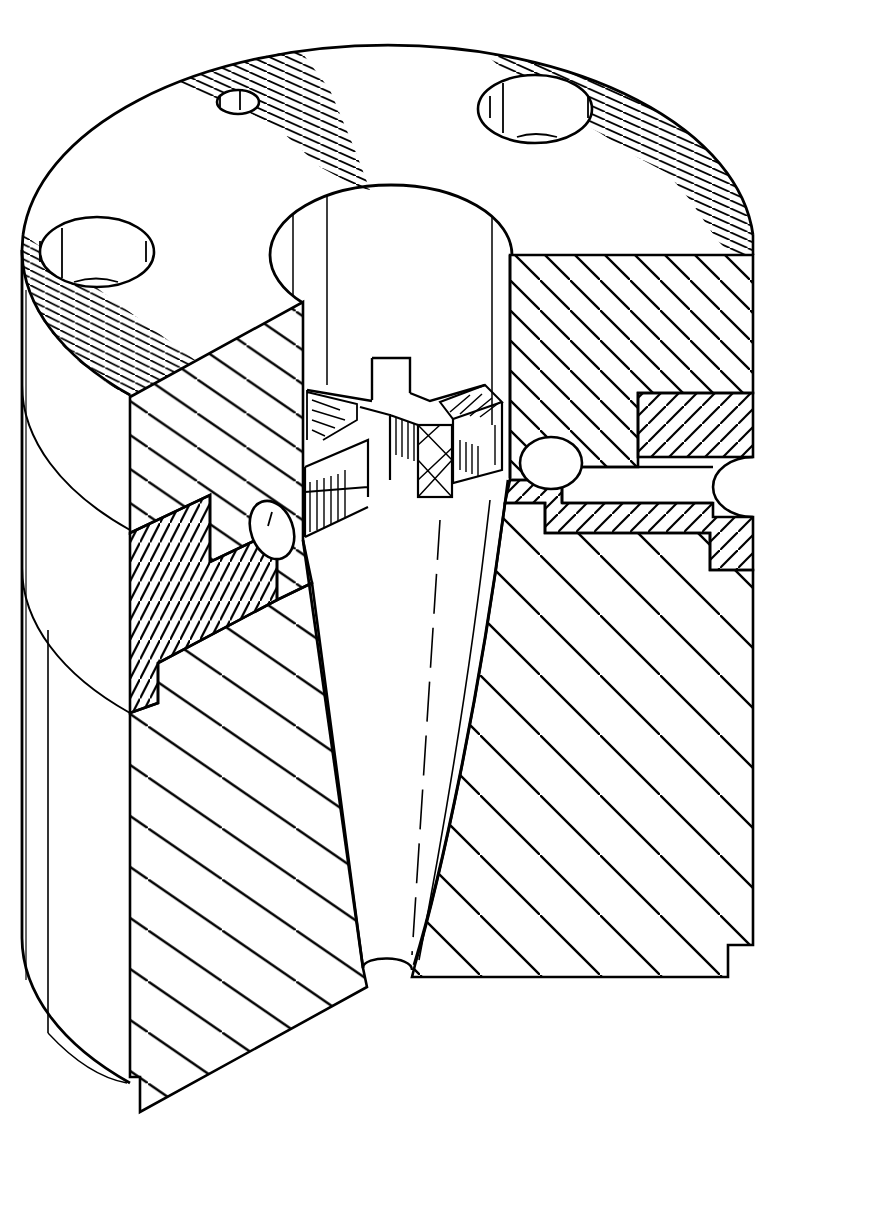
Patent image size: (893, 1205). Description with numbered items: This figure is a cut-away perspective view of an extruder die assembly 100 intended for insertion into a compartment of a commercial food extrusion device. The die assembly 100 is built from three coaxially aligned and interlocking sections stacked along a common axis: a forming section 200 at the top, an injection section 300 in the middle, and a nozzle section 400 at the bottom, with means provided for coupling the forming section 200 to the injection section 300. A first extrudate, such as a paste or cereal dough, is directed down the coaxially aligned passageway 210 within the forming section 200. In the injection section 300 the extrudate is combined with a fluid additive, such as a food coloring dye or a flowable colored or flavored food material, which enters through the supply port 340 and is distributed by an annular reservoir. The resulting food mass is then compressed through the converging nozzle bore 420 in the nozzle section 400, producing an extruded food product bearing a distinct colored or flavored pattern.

The extruder die assembly 100 is at (113, 90).
The forming section 200 is at (104, 442).
The passageway 210 is at (423, 302).
The injection section 300 is at (104, 598).
The supply port 340 is at (707, 485).
The nozzle section 400 is at (101, 868).
The converging nozzle bore 420 is at (426, 642).